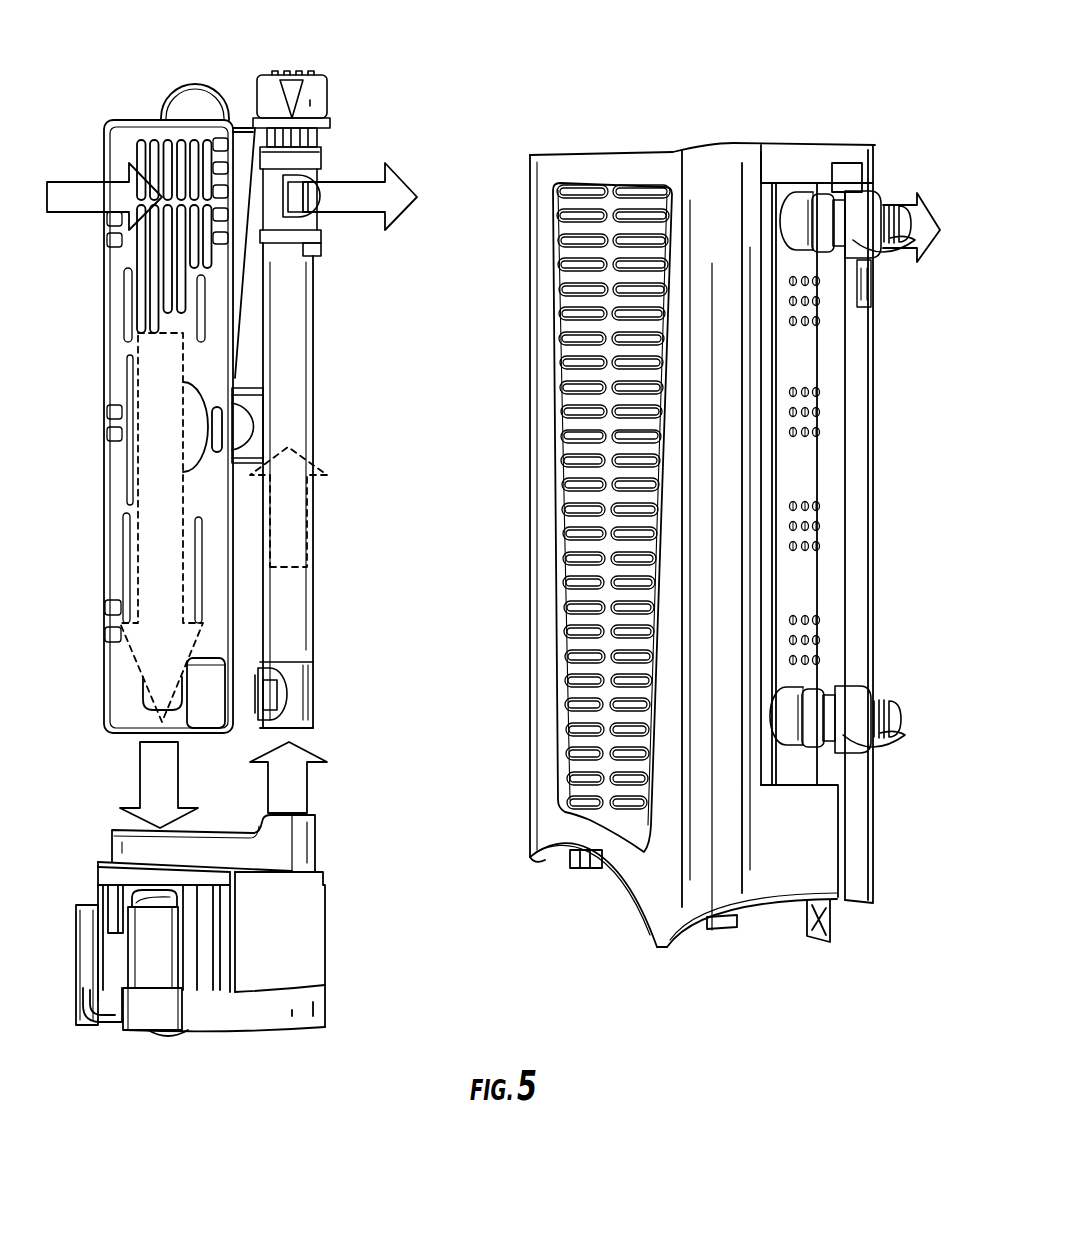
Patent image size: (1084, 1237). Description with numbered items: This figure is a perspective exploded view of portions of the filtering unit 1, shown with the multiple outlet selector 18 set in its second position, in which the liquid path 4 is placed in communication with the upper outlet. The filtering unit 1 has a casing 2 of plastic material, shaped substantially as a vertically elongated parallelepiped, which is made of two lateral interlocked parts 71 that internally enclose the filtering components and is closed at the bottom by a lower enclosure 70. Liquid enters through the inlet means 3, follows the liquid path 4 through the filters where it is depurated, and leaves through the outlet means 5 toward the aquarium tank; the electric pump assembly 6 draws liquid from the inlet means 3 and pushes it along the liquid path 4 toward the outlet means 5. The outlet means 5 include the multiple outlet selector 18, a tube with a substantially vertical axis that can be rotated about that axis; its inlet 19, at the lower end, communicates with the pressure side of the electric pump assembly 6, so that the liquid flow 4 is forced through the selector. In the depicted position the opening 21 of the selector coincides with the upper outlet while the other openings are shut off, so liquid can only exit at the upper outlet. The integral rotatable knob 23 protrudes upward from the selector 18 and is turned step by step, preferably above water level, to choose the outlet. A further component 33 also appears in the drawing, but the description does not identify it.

The filtering unit 1 is at (722, 90).
The casing 2 is at (313, 925).
The inlet means 3 is at (150, 144).
The liquid path 4 is at (107, 208).
The outlet means 5 is at (322, 602).
The electric pump assembly 6 is at (332, 891).
The multiple outlet selector 18 is at (322, 345).
The inlet 19 is at (300, 732).
The opening 21 is at (306, 226).
The integral rotatable knob 23 is at (318, 101).
The clip 33 is at (308, 175).
The lower enclosure 70 is at (310, 945).
The lateral interlocked parts 71 is at (542, 528).